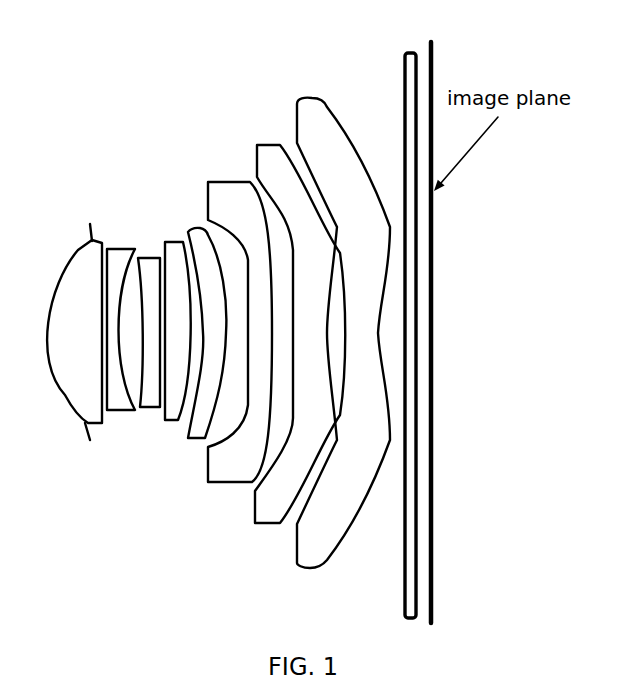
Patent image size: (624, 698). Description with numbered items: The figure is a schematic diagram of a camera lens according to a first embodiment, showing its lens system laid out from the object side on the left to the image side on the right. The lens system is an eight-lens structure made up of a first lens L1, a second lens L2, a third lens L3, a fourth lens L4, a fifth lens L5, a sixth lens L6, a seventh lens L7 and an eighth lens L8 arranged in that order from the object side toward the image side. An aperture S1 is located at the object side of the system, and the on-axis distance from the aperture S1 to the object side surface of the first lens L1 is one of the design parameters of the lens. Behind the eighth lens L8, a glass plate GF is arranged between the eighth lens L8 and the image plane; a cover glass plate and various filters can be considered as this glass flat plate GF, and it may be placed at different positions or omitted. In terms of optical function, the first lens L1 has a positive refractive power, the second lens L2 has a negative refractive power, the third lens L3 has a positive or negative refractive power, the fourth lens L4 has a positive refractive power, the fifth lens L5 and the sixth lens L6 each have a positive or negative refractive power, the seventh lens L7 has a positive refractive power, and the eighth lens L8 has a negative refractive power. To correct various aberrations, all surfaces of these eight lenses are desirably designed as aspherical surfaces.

The first lens L1 is at (74, 332).
The second lens L2 is at (120, 320).
The third lens L3 is at (146, 318).
The fourth lens L4 is at (175, 323).
The fifth lens L5 is at (206, 324).
The sixth lens L6 is at (240, 321).
The seventh lens L7 is at (300, 323).
The eighth lens L8 is at (343, 322).
The aperture S1 is at (83, 214).
The glass plate GF is at (408, 322).